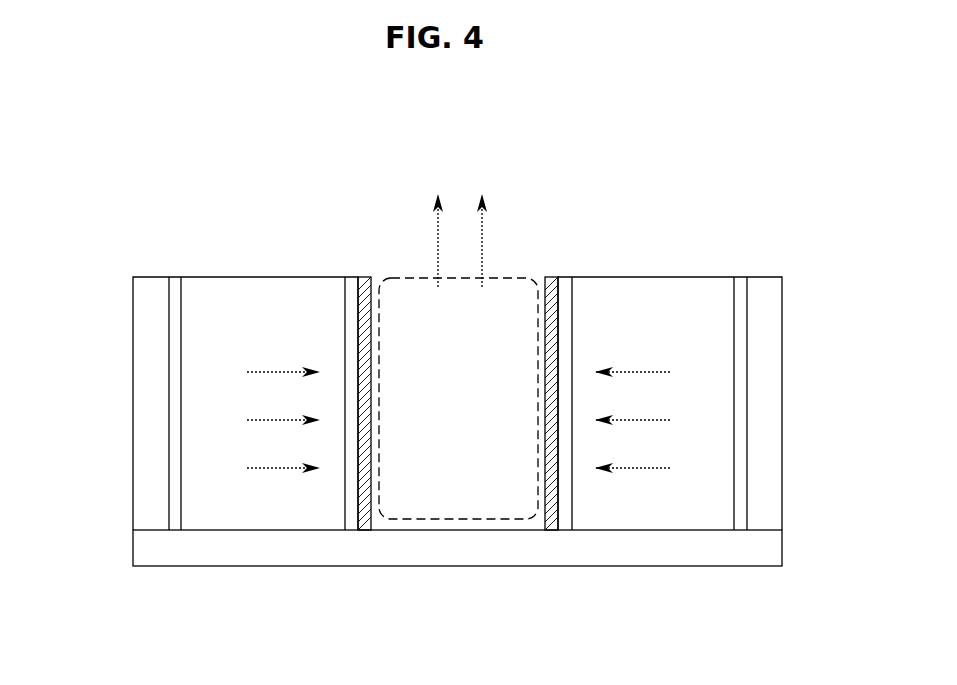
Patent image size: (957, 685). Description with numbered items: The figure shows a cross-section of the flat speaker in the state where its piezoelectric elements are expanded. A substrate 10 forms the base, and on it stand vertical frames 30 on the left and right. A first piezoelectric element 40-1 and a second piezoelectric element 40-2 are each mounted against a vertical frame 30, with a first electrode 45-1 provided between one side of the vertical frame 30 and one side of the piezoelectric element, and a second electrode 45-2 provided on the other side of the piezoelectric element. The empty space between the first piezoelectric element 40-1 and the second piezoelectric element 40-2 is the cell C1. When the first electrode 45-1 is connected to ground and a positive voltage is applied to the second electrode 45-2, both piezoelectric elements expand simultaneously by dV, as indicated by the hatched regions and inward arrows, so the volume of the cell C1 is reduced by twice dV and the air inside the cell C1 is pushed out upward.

The substrate 10 is at (637, 555).
The vertical frame 30 is at (145, 395).
The first electrode 45-1 is at (173, 293).
The second electrode 45-2 is at (352, 292).
The expansion amount dV is at (364, 290).
The cell C1 is at (517, 278).
The first piezoelectric element 40-1 is at (207, 480).
The second piezoelectric element 40-2 is at (710, 481).